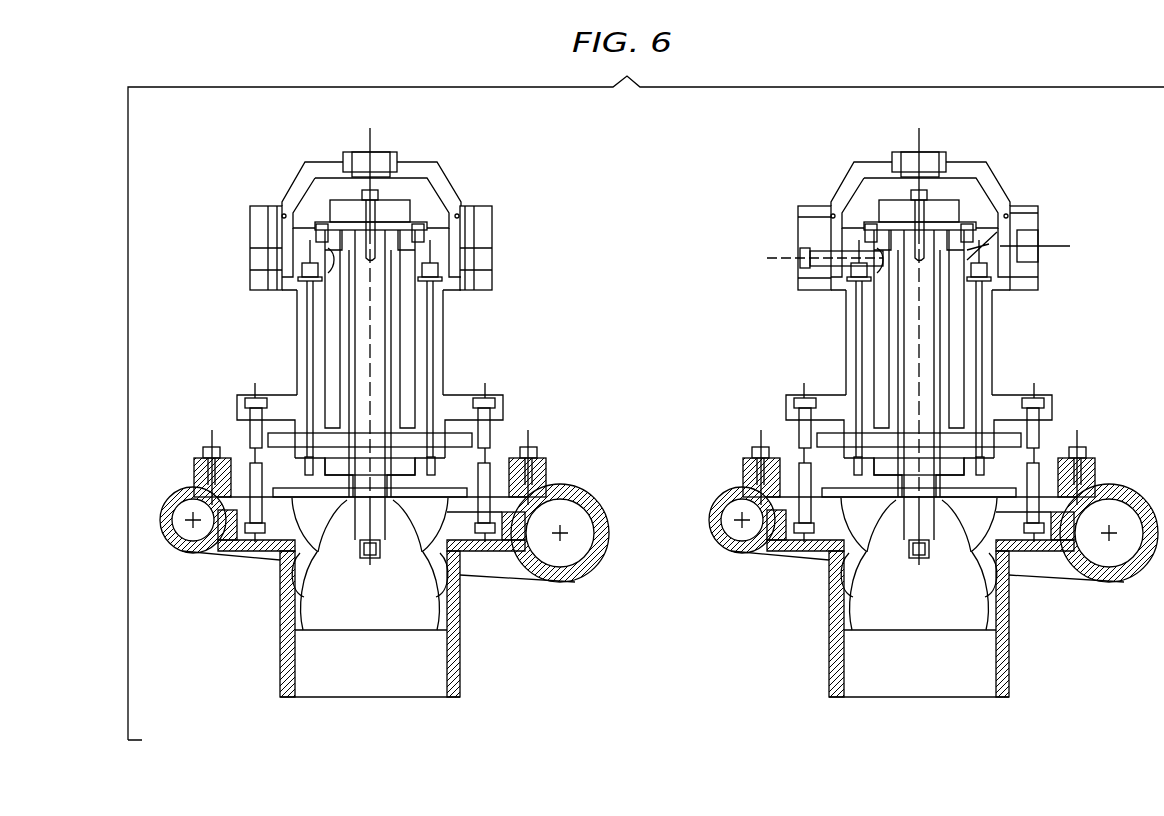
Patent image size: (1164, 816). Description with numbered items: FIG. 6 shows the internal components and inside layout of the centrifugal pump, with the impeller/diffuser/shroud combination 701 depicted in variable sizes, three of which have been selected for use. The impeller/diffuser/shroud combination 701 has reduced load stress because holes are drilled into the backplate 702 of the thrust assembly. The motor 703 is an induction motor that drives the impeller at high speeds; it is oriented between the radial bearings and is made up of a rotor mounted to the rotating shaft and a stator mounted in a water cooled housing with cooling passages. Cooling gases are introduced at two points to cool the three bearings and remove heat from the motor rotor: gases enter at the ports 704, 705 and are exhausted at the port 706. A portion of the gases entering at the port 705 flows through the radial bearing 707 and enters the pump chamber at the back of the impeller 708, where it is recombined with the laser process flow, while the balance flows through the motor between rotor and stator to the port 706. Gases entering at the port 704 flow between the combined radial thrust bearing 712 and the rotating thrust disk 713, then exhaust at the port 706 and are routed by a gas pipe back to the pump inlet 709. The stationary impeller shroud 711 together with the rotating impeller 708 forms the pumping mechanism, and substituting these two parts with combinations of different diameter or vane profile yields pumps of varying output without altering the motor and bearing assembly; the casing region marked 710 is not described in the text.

The impeller/diffuser/shroud combination 701 is at (268, 161).
The backplate 702 is at (1012, 573).
The motor 703 is at (956, 348).
The gas inlet port 704 is at (927, 150).
The gas inlet port 705 is at (1028, 400).
The exhaust port 706 is at (1030, 240).
The radial bearing 707 is at (945, 462).
The impeller 708 is at (298, 578).
The pump inlet 709 is at (940, 630).
The volute casing 710 is at (585, 490).
The stationary impeller shroud 711 is at (428, 603).
The combined radial thrust bearing 712 is at (428, 225).
The rotating thrust disk 713 is at (397, 198).